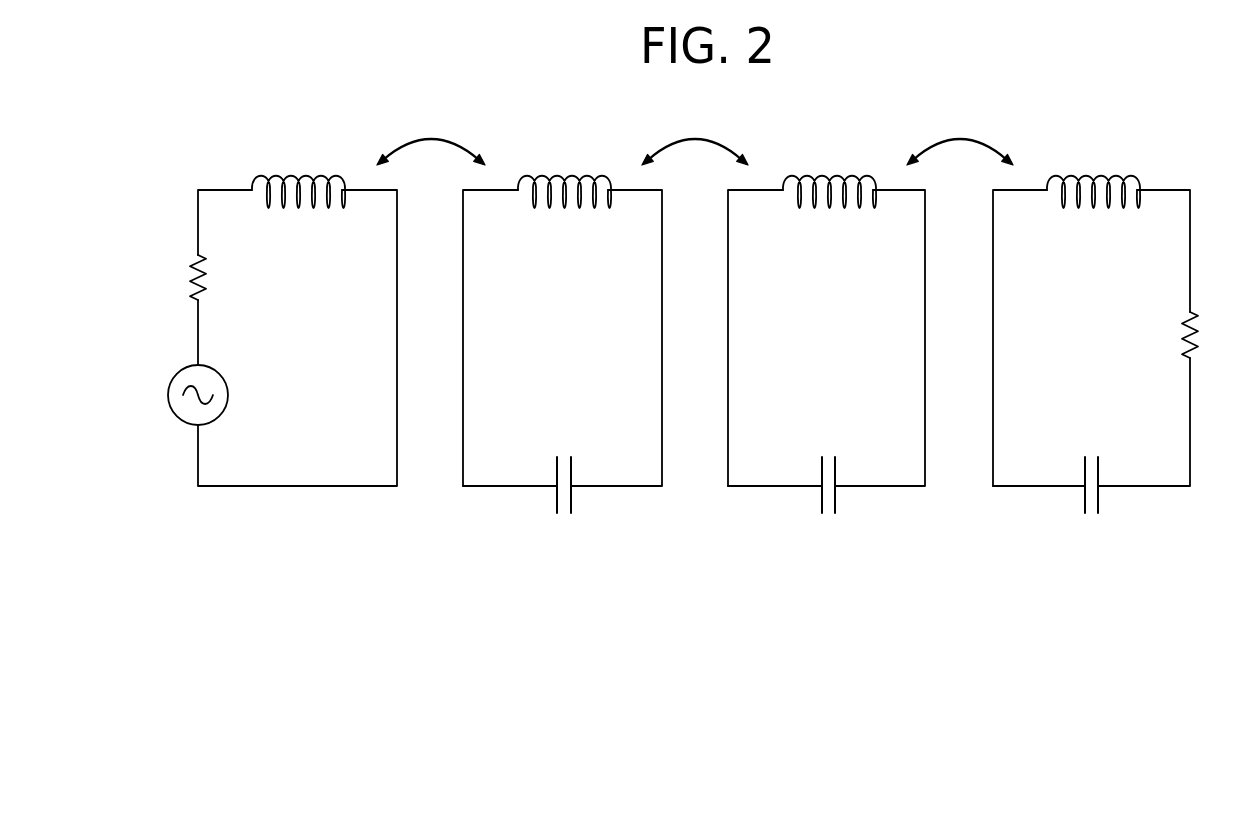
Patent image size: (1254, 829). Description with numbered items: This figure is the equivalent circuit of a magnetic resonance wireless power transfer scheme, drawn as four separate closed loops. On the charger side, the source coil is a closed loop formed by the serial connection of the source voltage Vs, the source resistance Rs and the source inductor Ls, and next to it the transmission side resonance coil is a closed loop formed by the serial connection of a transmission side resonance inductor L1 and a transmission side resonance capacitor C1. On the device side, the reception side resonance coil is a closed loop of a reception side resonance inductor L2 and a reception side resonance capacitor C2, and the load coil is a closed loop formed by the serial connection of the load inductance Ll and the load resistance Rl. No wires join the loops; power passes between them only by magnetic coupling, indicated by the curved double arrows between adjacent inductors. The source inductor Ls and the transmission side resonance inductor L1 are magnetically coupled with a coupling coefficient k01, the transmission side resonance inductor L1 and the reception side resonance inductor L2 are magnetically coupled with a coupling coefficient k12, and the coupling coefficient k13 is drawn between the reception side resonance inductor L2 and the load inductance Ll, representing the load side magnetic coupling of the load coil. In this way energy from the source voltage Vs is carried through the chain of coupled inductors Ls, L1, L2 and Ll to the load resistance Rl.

The source inductor Ls is at (298, 178).
The source resistance Rs is at (214, 277).
The source voltage Vs is at (183, 395).
The transmission side resonance inductor L1 is at (564, 177).
The transmission side resonance capacitor C1 is at (565, 501).
The reception side resonance inductor L2 is at (829, 177).
The reception side resonance capacitor C2 is at (830, 501).
The load inductance Ll is at (1093, 177).
The load resistance Rl is at (1205, 335).
The coupling coefficient k01 is at (431, 141).
The coupling coefficient k12 is at (695, 140).
The coupling coefficient k13 is at (960, 141).